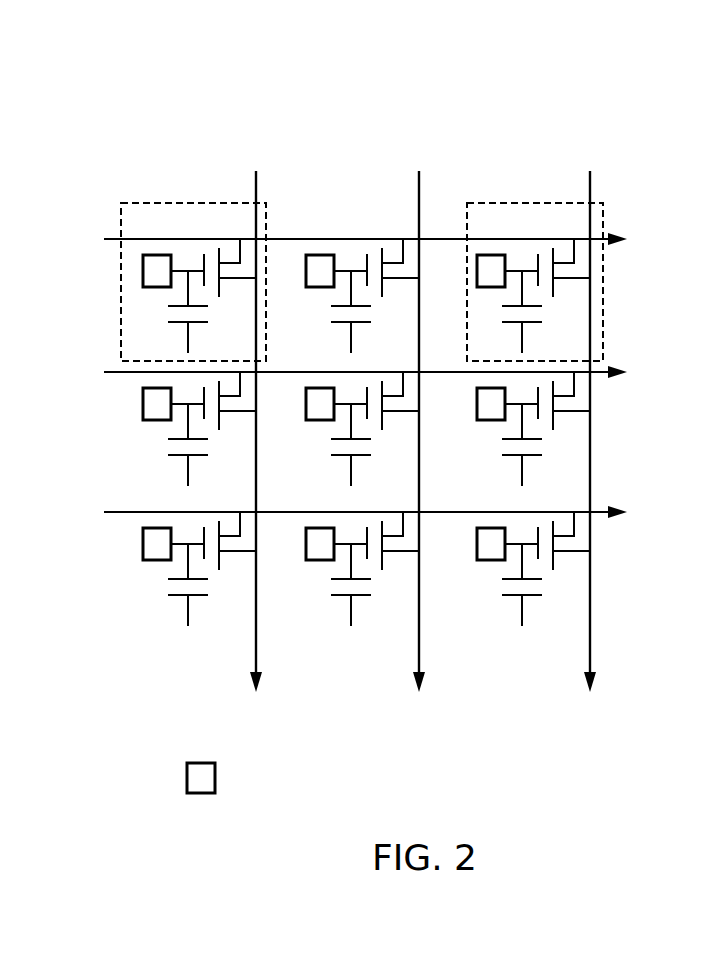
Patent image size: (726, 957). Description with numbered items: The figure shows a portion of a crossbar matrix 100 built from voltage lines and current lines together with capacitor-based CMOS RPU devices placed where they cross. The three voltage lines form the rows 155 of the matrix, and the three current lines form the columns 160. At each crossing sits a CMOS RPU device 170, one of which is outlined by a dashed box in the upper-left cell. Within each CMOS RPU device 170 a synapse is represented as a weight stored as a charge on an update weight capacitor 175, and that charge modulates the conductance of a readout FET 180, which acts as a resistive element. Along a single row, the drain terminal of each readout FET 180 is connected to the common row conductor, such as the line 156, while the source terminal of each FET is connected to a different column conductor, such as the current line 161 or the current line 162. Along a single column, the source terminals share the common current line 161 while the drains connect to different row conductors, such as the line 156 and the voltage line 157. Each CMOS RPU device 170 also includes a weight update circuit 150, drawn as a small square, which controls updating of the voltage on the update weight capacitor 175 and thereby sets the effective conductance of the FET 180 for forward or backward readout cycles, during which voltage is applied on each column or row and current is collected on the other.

The crossbar matrix 100 is at (157, 78).
The weight update circuit 150 is at (143, 271).
The rows 155 is at (632, 213).
The line 156 is at (305, 238).
The voltage line 157 is at (301, 371).
The columns 160 is at (597, 165).
The current line 161 is at (256, 657).
The current line 162 is at (419, 657).
The CMOS RPU device 170 is at (195, 203).
The update weight capacitor 175 is at (150, 316).
The readout FET 180 is at (190, 253).